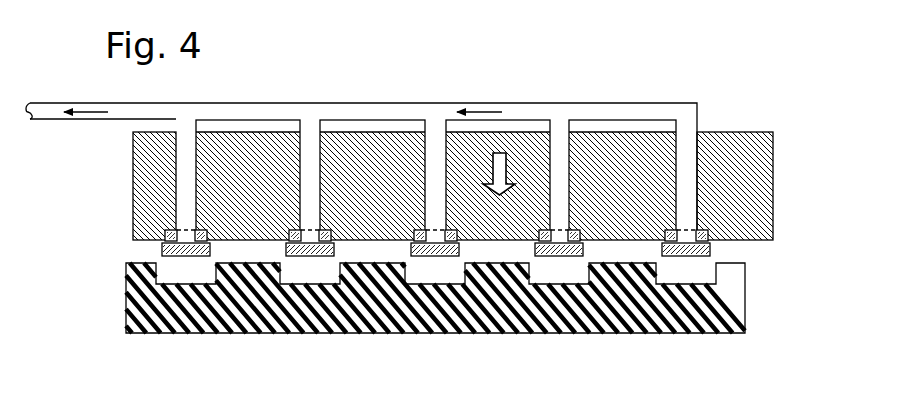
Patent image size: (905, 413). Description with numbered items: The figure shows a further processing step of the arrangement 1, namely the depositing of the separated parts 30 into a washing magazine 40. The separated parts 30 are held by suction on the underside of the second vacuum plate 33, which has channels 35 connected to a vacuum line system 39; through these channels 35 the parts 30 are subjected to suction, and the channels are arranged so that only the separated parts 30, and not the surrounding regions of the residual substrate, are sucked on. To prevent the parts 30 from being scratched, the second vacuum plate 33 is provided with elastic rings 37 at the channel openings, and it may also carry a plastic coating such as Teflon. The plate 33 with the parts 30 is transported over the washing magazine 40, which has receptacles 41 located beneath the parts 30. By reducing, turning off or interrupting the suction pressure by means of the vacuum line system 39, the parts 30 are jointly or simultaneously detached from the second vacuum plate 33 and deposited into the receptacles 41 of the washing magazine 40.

The device 1 is at (728, 44).
The separated parts 30 is at (163, 251).
The second vacuum plate 33 is at (738, 143).
The channels 35 is at (683, 145).
The elastic rings 37 is at (668, 230).
The vacuum line system 39 is at (561, 103).
The washing magazine 40 is at (746, 285).
The receptacles 41 is at (686, 275).